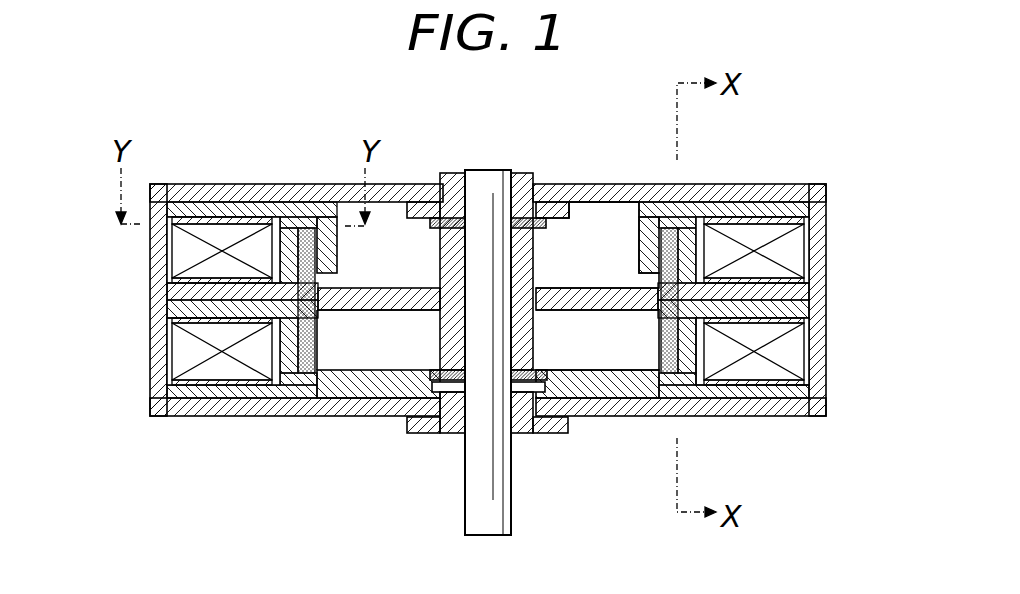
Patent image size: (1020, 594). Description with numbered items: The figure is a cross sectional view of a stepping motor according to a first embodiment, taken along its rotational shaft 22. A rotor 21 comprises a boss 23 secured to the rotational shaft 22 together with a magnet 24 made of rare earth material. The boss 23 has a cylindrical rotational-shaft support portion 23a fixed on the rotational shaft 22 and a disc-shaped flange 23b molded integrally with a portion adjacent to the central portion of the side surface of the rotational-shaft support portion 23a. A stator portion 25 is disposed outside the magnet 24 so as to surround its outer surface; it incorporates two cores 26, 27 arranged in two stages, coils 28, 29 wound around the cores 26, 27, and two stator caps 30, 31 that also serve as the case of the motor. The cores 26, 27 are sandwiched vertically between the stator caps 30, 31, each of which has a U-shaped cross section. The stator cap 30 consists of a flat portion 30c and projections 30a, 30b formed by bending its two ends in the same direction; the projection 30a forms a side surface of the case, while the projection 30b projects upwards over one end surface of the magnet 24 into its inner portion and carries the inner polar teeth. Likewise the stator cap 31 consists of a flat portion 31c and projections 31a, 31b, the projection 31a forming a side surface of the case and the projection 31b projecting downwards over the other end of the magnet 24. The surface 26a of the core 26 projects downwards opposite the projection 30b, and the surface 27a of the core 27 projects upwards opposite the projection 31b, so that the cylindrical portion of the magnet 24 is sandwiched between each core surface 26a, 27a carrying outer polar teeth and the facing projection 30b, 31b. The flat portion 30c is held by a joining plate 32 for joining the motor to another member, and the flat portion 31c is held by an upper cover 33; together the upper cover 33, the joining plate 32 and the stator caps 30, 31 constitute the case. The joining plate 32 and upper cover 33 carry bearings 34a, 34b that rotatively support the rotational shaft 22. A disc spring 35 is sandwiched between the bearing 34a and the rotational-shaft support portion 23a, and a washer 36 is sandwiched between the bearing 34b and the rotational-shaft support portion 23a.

The rotor 21 is at (594, 225).
The rotational shaft 22 is at (494, 170).
The boss 23 is at (398, 285).
The rotational-shaft support portion 23a is at (438, 336).
The flange 23b is at (345, 283).
The magnet 24 is at (660, 385).
The stator portion 25 is at (118, 252).
The core 26 is at (826, 305).
The surface of the core 26a is at (637, 382).
The core 27 is at (826, 287).
The surface of the core 27a is at (652, 252).
The coil 28 is at (180, 350).
The coil 29 is at (178, 253).
The stator cap 30 is at (826, 380).
The projection 30a is at (826, 345).
The projection 30b is at (640, 335).
The flat portion 30c is at (732, 392).
The stator cap 31 is at (826, 205).
The projection 31a is at (826, 236).
The projection 31b is at (650, 250).
The flat portion 31c is at (741, 205).
The joining plate 32 is at (205, 417).
The upper cover 33 is at (207, 185).
The bearing 34a is at (437, 434).
The bearing 34b is at (455, 185).
The disc spring 35 is at (432, 380).
The washer 36 is at (447, 216).